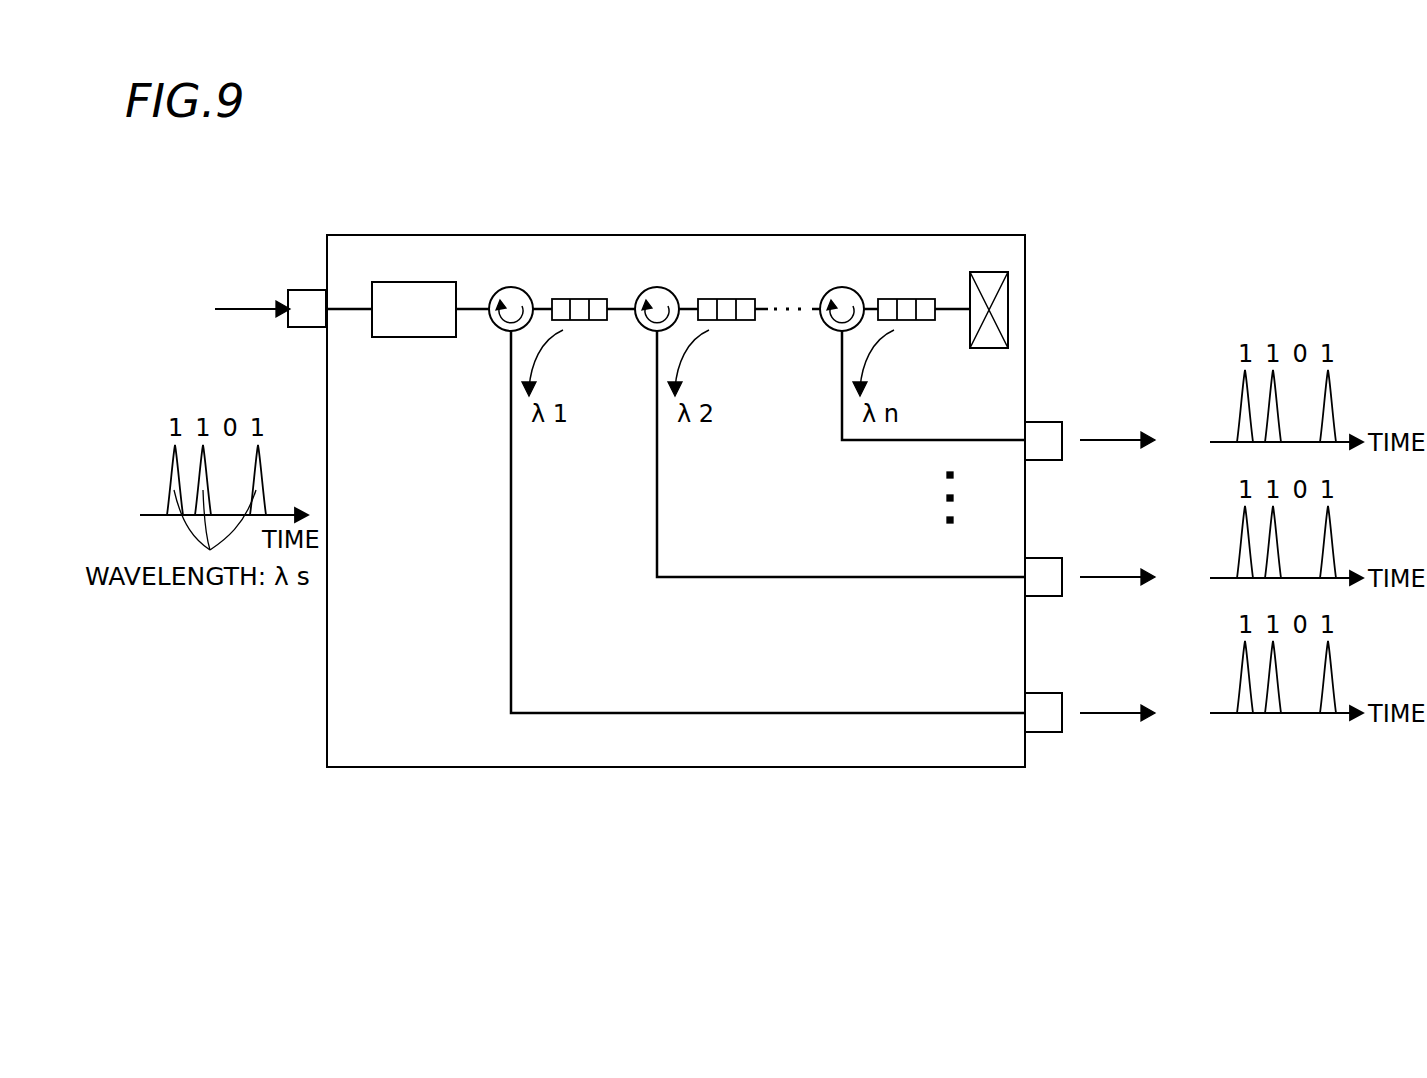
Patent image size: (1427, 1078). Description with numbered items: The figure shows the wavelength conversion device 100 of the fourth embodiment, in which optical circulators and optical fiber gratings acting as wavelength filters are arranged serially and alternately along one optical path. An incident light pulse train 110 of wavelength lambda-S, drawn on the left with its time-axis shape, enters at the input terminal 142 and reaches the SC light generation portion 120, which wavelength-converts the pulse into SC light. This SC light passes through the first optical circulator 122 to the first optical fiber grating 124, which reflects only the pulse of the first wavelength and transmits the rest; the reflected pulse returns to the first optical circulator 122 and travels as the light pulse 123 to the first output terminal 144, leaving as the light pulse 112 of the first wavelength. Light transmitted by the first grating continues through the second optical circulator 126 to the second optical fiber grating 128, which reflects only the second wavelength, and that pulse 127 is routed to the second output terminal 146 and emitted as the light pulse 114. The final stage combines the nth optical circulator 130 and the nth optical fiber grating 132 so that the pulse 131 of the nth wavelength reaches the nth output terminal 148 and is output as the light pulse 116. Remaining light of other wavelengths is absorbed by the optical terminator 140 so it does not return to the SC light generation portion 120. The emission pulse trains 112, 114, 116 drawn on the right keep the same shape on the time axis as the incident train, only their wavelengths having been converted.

The wavelength conversion device 100 is at (970, 235).
The incident light pulse train 110 is at (224, 309).
The light pulse of wavelength λ1 112 is at (1141, 714).
The light pulse of wavelength λ2 114 is at (1141, 578).
The light pulse of wavelength λn 116 is at (1141, 441).
The SC light generation portion 120 is at (415, 282).
The first optical circulator 122 is at (513, 287).
The light pulse of wavelength λ1 123 is at (509, 628).
The first optical fiber grating 124 is at (582, 299).
The second optical circulator 126 is at (658, 287).
The light pulse of wavelength λ2 127 is at (657, 513).
The second optical fiber grating 128 is at (727, 299).
The nth optical circulator 130 is at (842, 287).
The light pulse of wavelength λn 131 is at (887, 442).
The nth optical fiber grating 132 is at (912, 299).
The optical terminator 140 is at (993, 272).
The input terminal 142 is at (305, 290).
The first output terminal 144 is at (1045, 693).
The second output terminal 146 is at (1045, 558).
The nth output terminal 148 is at (1045, 422).